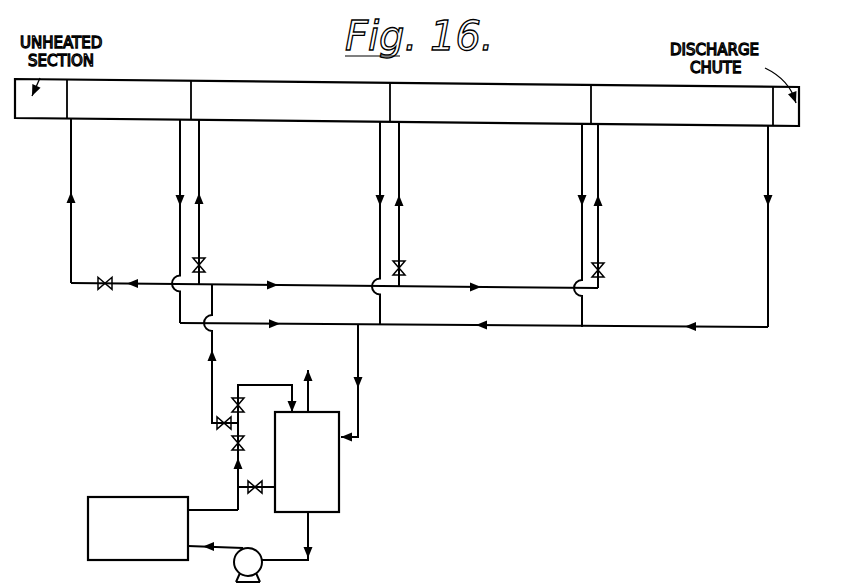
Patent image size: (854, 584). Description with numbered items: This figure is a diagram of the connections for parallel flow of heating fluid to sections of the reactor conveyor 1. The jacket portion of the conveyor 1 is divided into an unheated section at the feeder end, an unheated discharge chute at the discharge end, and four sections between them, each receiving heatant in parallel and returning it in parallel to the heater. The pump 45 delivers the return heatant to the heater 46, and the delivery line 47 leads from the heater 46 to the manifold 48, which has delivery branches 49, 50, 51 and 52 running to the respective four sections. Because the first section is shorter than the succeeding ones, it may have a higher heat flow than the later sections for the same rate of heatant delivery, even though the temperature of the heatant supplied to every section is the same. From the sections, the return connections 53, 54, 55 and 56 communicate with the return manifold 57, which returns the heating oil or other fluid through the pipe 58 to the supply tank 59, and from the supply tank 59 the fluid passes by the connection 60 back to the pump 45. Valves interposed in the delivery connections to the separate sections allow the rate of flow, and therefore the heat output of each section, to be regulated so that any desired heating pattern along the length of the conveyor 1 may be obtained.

The conveyor 1 is at (683, 128).
The pump 45 is at (235, 562).
The heater 46 is at (132, 503).
The delivery line 47 is at (212, 385).
The manifold 48 is at (160, 290).
The delivery branch 49 is at (71, 228).
The delivery branch 50 is at (201, 228).
The delivery branch 51 is at (401, 230).
The delivery branch 52 is at (600, 231).
The return connection 53 is at (178, 227).
The return connection 54 is at (378, 229).
The return connection 55 is at (580, 231).
The return connection 56 is at (768, 238).
The return manifold 57 is at (549, 327).
The pipe 58 is at (358, 406).
The supply tank 59 is at (339, 488).
The connection 60 is at (310, 531).